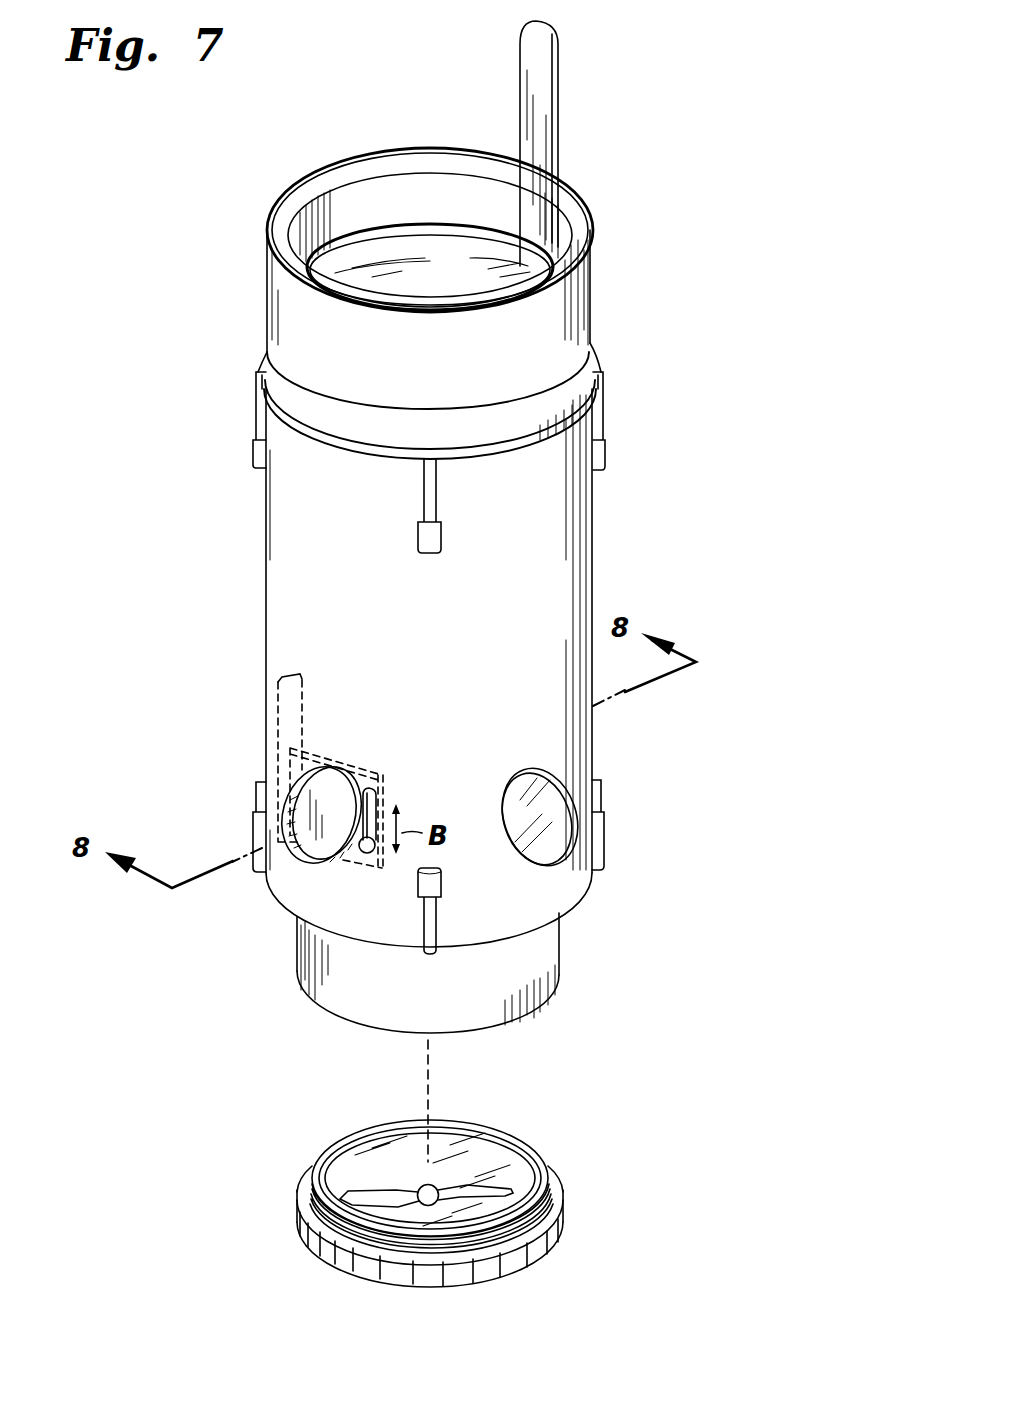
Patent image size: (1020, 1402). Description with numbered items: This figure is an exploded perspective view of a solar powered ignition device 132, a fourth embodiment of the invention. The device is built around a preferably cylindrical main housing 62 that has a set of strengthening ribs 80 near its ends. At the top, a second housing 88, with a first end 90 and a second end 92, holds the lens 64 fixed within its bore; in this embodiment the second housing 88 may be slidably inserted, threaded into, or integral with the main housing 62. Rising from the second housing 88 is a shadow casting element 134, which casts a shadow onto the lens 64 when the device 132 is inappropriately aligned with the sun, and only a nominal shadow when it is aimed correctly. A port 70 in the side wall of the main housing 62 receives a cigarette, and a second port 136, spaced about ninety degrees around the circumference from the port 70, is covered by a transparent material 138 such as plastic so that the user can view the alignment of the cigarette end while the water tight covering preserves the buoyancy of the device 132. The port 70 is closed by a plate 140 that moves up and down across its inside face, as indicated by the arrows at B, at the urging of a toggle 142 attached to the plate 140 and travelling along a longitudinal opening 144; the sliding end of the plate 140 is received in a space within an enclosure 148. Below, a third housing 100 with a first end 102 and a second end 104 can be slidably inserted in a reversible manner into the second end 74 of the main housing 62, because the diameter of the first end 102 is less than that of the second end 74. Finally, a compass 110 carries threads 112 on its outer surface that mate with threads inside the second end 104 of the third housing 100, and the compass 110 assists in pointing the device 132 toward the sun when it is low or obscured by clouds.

The main housing 62 is at (590, 753).
The lens 64 is at (372, 248).
The port 70 is at (312, 845).
The second end of the main housing 74 is at (582, 900).
The strengthening ribs 80 is at (255, 410).
The second housing 88 is at (585, 292).
The first end of the second housing 90 is at (401, 160).
The second end of the second housing 92 is at (587, 347).
The third housing 100 is at (350, 1007).
The first end of the third housing 102 is at (559, 940).
The second end of the third housing 104 is at (519, 1018).
The compass 110 is at (380, 1214).
The threads 112 is at (482, 1242).
The solar powered ignition device 132 is at (606, 529).
The shadow casting element 134 is at (561, 91).
The second port 136 is at (557, 848).
The transparent material 138 is at (557, 825).
The plate 140 is at (288, 800).
The toggle 142 is at (364, 855).
The longitudinal opening 144 is at (360, 795).
The enclosure 148 is at (277, 703).